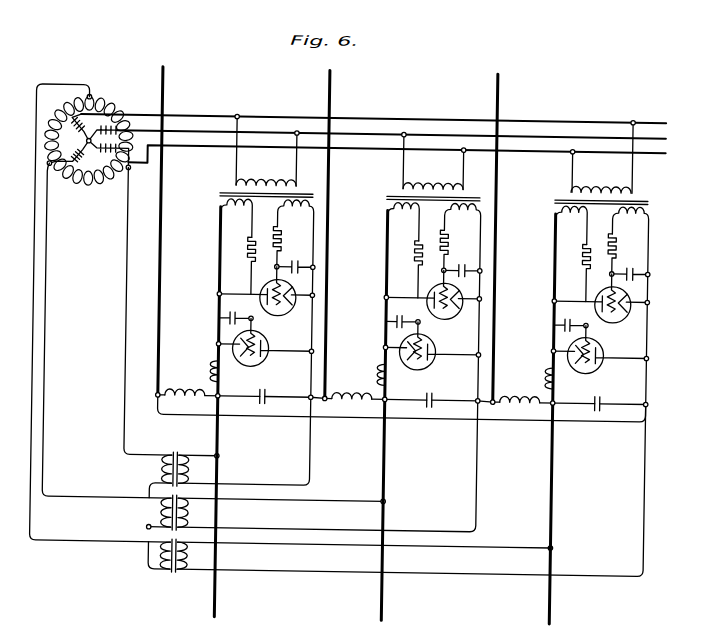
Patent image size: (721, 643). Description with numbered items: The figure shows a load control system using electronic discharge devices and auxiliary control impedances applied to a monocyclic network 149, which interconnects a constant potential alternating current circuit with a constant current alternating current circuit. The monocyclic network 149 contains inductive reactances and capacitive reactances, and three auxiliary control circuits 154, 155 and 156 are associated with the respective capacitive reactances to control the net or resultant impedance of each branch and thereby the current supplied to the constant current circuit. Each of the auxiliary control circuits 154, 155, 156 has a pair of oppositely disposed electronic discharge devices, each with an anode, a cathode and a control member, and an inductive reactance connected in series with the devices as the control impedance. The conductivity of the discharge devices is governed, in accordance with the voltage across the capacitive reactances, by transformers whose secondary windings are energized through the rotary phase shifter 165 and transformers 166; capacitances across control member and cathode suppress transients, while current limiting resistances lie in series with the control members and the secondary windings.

The monocyclic network 149 is at (362, 445).
The auxiliary control circuit 154 is at (257, 387).
The auxiliary control circuit 155 is at (410, 361).
The auxiliary control circuit 156 is at (578, 365).
The rotary phase shifter 165 is at (130, 96).
The transformer 166 is at (177, 453).